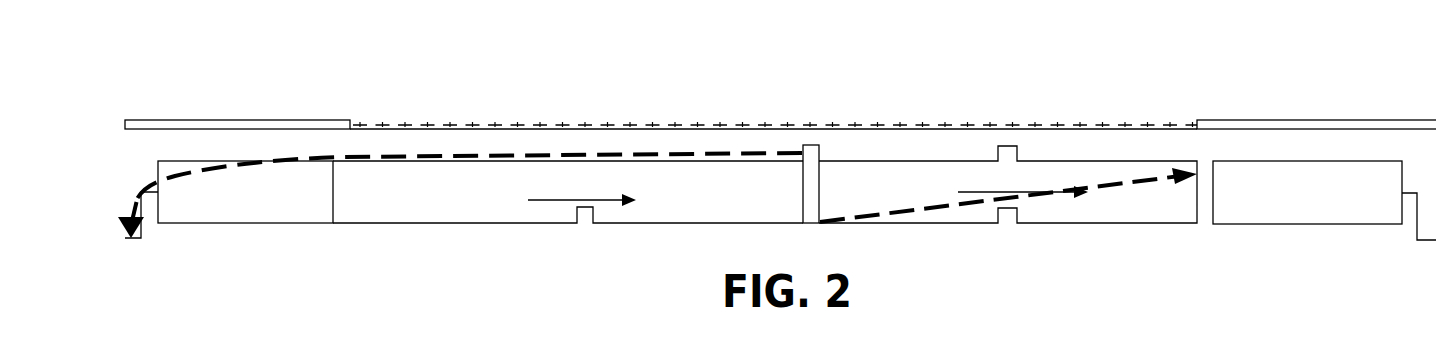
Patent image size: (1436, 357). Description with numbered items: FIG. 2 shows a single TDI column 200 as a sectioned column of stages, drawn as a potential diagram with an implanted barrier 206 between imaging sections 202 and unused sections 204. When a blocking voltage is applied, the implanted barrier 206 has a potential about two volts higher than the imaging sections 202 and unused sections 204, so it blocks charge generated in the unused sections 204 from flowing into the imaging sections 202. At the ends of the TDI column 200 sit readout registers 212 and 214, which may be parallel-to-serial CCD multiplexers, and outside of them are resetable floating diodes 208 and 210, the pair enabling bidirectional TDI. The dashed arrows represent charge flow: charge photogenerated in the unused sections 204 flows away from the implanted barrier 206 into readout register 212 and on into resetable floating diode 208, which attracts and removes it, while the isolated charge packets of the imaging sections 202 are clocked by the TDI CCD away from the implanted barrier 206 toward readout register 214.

The TDI column 200 is at (773, 22).
The imaging sections 202 is at (1062, 160).
The unused sections 204 is at (645, 191).
The implanted barrier 206 is at (805, 145).
The resetable floating diode 208 is at (135, 240).
The resetable floating diode 210 is at (1418, 240).
The readout register 212 is at (270, 217).
The readout register 214 is at (1322, 205).